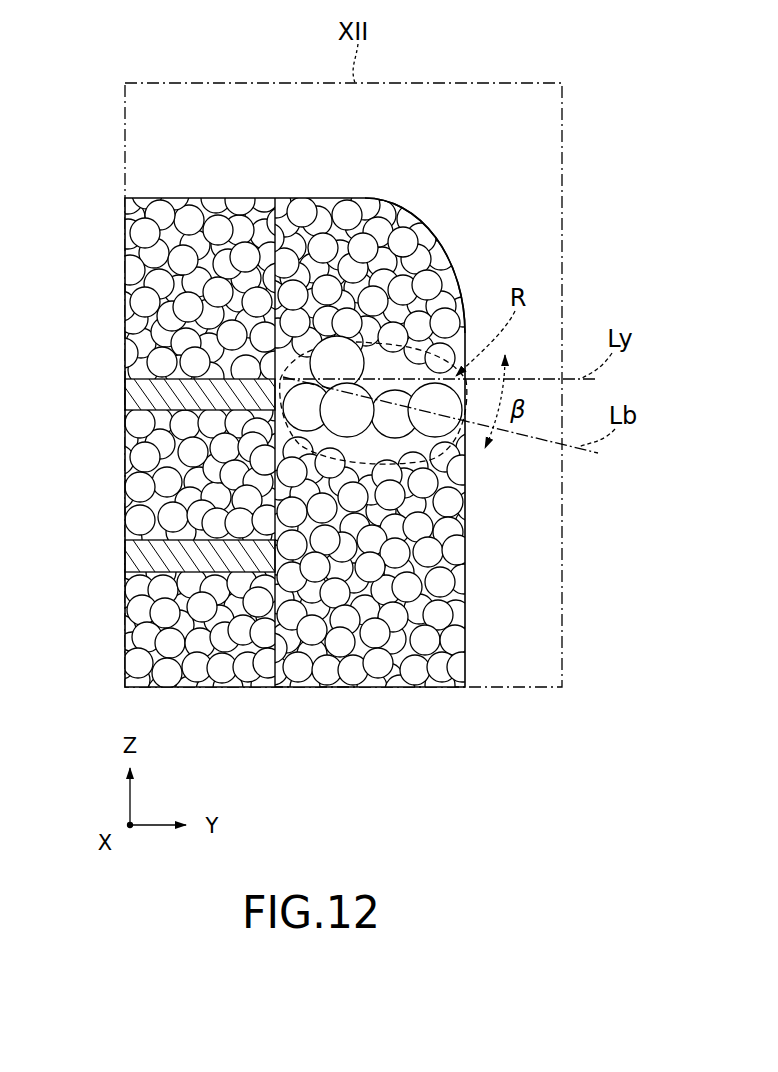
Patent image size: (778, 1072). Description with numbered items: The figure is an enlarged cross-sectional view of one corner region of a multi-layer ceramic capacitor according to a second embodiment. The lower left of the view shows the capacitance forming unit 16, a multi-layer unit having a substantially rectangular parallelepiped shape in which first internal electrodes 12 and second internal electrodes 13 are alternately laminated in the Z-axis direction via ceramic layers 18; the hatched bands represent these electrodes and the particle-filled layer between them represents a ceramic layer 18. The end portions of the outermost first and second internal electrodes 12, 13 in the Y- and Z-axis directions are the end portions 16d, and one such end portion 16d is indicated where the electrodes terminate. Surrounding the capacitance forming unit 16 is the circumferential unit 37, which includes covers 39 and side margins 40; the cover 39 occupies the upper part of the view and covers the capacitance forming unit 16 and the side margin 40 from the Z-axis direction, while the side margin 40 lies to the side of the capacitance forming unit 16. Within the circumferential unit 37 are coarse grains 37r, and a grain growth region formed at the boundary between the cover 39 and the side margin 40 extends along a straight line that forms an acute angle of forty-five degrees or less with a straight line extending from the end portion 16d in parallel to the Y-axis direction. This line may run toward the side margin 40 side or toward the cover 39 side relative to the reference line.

The first internal electrodes 12 is at (125, 388).
The second internal electrodes 13 is at (125, 551).
The capacitance forming unit 16 is at (124, 482).
The end portions 16d is at (271, 371).
The ceramic layers 18 is at (191, 499).
The circumferential unit 37 is at (393, 201).
The coarse particles 37r is at (319, 374).
The covers 39 is at (353, 304).
The side margins 40 is at (356, 601).